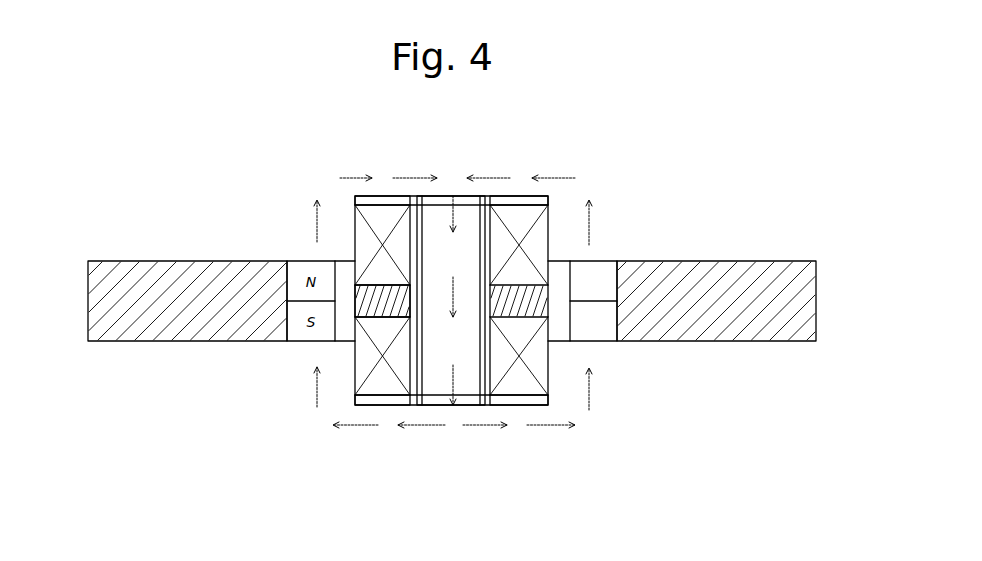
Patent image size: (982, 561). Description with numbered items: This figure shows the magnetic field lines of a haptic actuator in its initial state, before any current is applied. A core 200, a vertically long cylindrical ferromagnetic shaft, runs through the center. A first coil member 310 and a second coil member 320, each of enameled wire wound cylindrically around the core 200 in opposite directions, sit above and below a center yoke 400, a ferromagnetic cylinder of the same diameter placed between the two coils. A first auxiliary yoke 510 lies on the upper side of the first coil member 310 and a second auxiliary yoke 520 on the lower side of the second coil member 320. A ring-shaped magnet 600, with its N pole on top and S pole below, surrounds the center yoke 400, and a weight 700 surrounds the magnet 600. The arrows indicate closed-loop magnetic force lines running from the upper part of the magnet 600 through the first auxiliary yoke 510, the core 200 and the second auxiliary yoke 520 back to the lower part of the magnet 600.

The core 200 is at (462, 400).
The first coil member 310 is at (547, 208).
The second coil member 320 is at (355, 388).
The center yoke 400 is at (378, 305).
The first auxiliary yoke 510 is at (523, 196).
The second auxiliary yoke 520 is at (516, 400).
The magnet 600 is at (606, 327).
The weight 700 is at (758, 317).